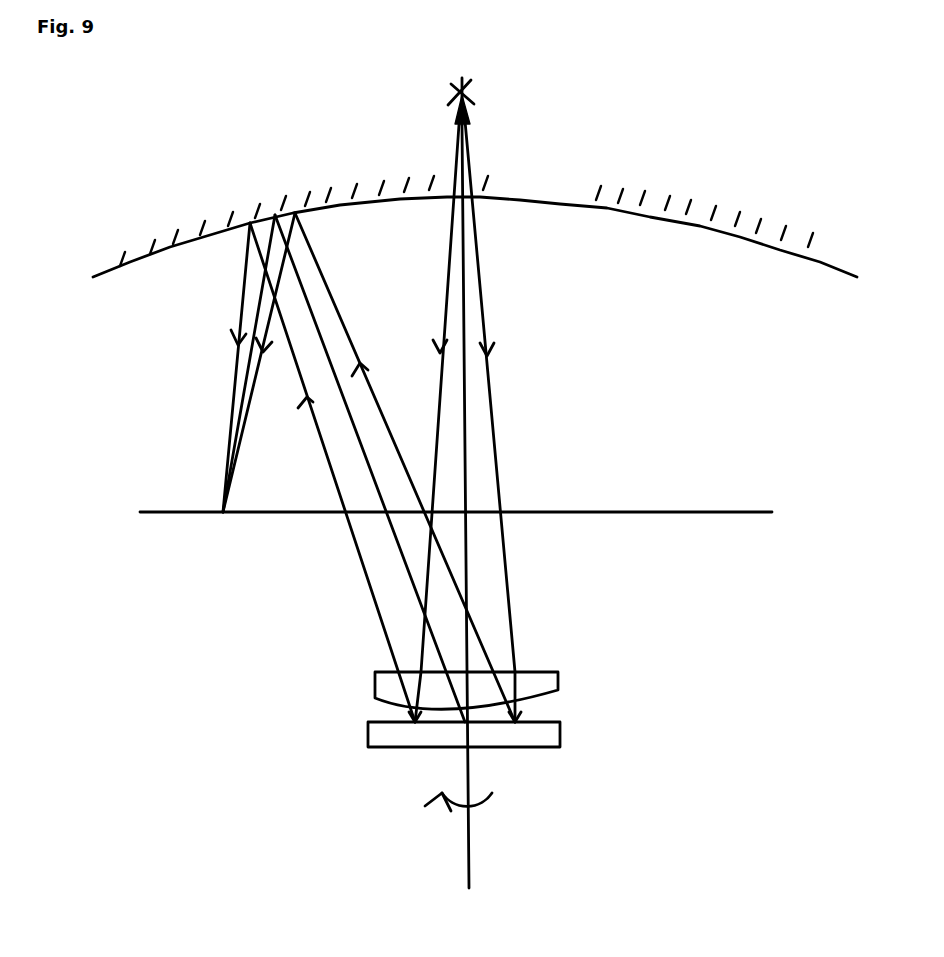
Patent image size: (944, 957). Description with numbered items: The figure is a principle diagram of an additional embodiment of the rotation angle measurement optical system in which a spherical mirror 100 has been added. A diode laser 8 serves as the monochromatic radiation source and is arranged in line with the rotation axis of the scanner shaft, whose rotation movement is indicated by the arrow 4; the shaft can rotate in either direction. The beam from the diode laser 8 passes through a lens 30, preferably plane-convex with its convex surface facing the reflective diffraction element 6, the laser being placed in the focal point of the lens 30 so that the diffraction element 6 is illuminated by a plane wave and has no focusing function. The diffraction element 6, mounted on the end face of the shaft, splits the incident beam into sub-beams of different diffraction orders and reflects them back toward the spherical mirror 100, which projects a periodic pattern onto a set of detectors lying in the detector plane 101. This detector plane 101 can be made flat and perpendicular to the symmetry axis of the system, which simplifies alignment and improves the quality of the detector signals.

The rotation movement arrow 4 is at (476, 506).
The reflective diffraction element 6 is at (486, 738).
The diode laser 8 is at (482, 101).
The lens 30 is at (489, 690).
The spherical mirror 100 is at (475, 221).
The detector plane 101 is at (456, 494).